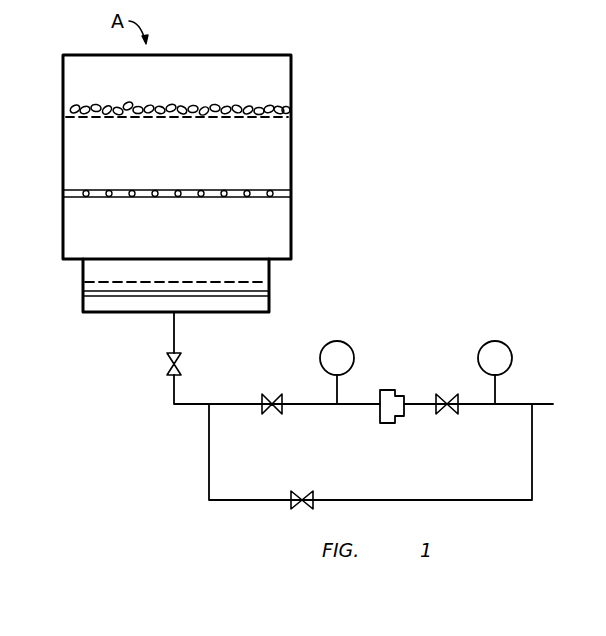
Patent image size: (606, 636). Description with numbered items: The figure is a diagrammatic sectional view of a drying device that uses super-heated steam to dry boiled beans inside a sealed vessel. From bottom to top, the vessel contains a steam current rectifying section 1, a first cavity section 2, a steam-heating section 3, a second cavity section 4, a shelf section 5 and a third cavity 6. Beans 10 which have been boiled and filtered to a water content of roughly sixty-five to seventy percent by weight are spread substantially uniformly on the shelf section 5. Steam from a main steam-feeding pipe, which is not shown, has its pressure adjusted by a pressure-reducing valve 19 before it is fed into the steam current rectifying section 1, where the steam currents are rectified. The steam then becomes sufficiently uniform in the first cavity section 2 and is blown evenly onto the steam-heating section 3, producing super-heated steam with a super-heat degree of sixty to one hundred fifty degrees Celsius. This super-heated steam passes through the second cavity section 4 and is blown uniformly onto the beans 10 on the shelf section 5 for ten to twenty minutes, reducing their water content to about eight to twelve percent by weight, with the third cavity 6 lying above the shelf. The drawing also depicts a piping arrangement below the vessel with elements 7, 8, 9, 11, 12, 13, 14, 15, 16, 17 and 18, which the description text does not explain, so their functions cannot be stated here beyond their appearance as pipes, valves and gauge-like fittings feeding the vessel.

The steam current rectifying section 1 is at (262, 290).
The first cavity section 2 is at (277, 236).
The steam-heating section 3 is at (281, 199).
The second cavity section 4 is at (273, 166).
The shelf section 5 is at (267, 120).
The third cavity 6 is at (258, 66).
The distribution plate 7 is at (107, 297).
The gas inlet 8 is at (115, 282).
The holes 9 is at (86, 190).
The beans 10 is at (75, 106).
The gas supply pipe 11 is at (174, 336).
The bypass pipe 12 is at (406, 498).
The valve 13 is at (181, 364).
The valve 14 is at (273, 393).
The valve 15 is at (300, 490).
The valve 16 is at (448, 393).
The pressure gauge 17 is at (349, 346).
The pressure gauge 18 is at (508, 345).
The pressure-reducing valve 19 is at (389, 388).